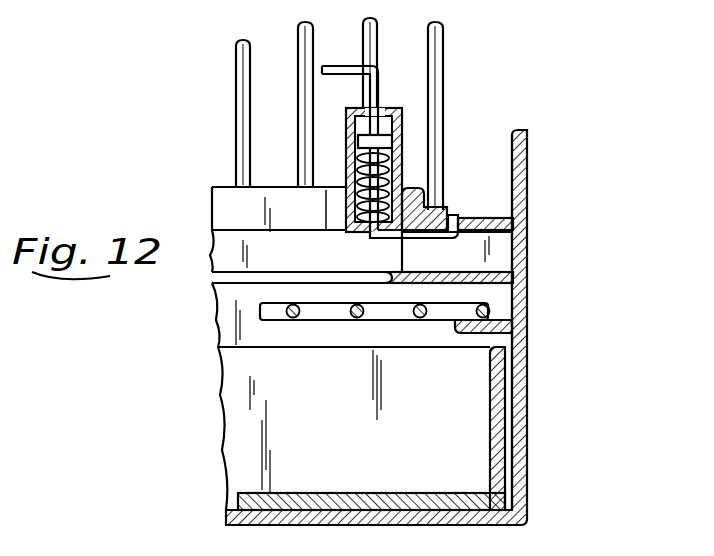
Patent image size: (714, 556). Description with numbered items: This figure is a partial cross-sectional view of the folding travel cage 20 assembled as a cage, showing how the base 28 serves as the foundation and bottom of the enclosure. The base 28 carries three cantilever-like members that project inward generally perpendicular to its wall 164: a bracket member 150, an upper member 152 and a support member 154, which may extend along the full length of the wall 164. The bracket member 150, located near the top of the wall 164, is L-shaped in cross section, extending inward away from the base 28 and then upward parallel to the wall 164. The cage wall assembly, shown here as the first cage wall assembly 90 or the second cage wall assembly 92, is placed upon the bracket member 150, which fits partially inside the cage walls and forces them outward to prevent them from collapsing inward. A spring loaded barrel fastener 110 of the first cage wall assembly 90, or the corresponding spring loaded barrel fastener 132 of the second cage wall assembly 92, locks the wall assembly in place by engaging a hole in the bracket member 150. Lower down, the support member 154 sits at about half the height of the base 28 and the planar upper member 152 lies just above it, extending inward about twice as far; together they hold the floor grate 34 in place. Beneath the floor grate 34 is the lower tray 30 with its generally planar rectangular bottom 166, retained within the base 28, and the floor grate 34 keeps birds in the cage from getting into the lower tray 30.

The folding travel cage 20 is at (200, 296).
The base 28 is at (528, 478).
The lower tray 30 is at (496, 432).
The floor grate 34 is at (323, 322).
The first cage wall assembly 90 is at (440, 40).
The second cage wall assembly 92 is at (339, 114).
The spring loaded barrel fastener 110 is at (388, 132).
The spring loaded barrel fastener 132 is at (390, 152).
The bracket member 150 is at (482, 218).
The upper member 152 is at (398, 274).
The support member 154 is at (455, 328).
The wall 164 is at (528, 370).
The bottom 166 is at (358, 494).